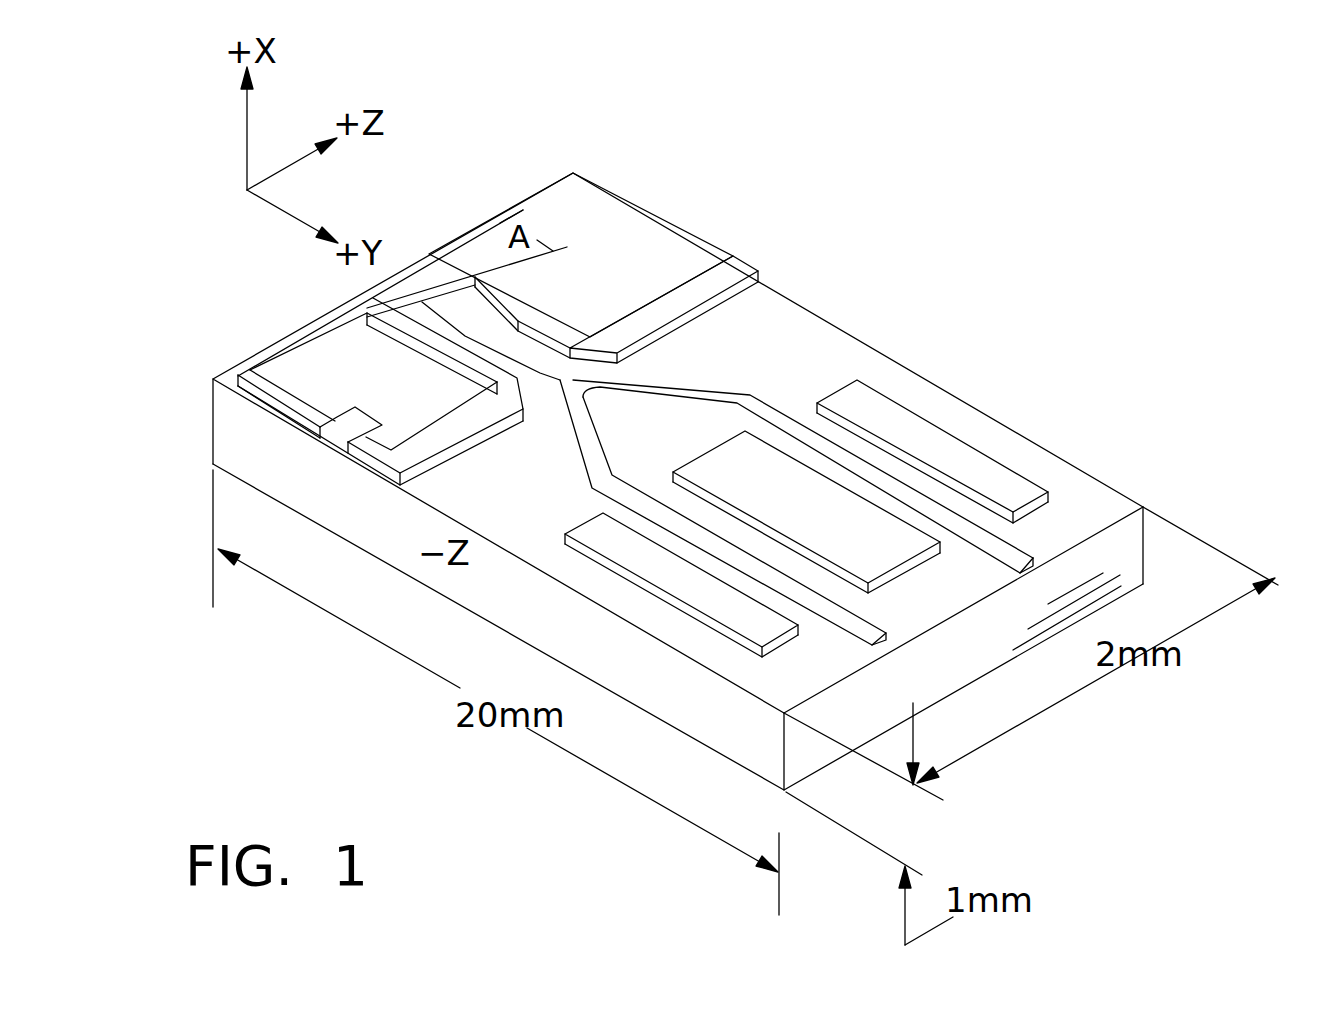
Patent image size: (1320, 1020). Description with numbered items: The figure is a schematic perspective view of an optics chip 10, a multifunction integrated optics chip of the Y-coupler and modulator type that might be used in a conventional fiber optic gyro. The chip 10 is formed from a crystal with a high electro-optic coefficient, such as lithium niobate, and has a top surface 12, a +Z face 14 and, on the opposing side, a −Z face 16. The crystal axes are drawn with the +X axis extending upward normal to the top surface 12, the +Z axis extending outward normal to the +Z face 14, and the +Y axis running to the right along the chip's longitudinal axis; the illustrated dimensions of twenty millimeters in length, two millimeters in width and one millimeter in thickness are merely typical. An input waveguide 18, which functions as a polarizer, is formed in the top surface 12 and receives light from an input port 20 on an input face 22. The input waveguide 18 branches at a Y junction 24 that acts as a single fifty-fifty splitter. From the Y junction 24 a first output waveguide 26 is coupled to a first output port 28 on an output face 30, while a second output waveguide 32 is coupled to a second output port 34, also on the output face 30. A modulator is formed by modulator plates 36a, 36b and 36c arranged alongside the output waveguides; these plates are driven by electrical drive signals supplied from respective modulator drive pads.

The optics chip 10 is at (775, 244).
The top surface 12 is at (530, 531).
The +Z face 14 is at (845, 327).
The −Z face 16 is at (352, 511).
The input waveguide 18 is at (460, 317).
The input port 20 is at (384, 279).
The input face 22 is at (251, 352).
The Y junction 24 is at (607, 379).
The first output waveguide 26 is at (735, 398).
The first output port 28 is at (1040, 567).
The output face 30 is at (988, 651).
The second output waveguide 32 is at (584, 442).
The second output port 34 is at (880, 647).
The modulator plate 36a is at (681, 585).
The modulator plate 36b is at (806, 512).
The modulator plate 36c is at (932, 451).